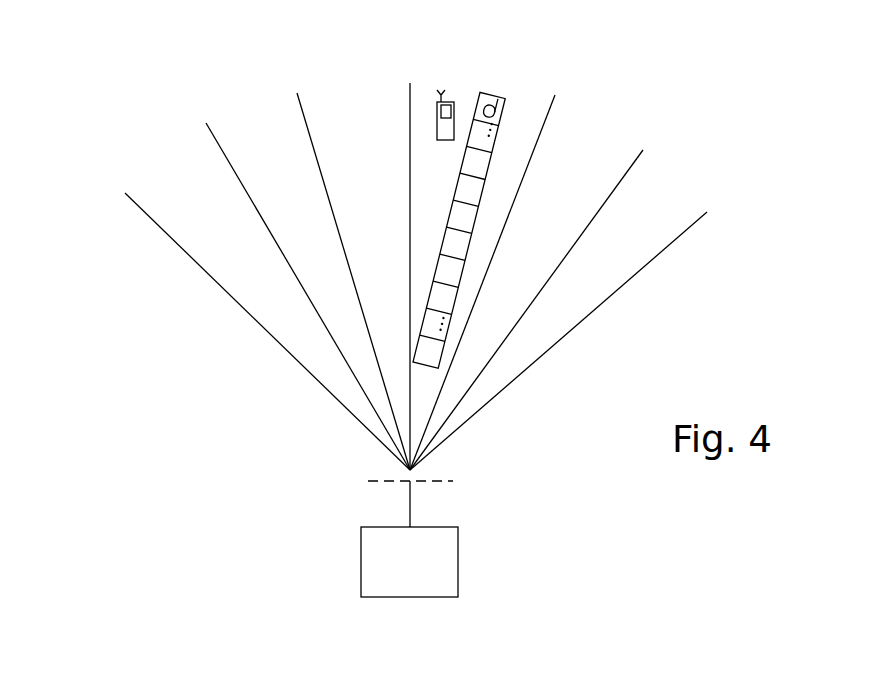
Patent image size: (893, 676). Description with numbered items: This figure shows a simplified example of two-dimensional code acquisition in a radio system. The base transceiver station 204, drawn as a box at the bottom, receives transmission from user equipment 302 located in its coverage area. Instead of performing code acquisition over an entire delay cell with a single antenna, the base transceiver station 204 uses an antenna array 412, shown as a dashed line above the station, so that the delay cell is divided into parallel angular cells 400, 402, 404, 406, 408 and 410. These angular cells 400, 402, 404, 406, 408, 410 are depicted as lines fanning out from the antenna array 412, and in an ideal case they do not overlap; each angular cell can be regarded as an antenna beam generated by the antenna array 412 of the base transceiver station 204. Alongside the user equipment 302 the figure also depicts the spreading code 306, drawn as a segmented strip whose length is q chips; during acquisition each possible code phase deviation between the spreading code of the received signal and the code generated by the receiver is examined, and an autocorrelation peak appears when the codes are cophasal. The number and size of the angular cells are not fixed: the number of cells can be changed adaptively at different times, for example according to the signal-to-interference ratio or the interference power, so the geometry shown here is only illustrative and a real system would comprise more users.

The angular cell 400 is at (167, 180).
The angular cell 402 is at (275, 122).
The angular cell 404 is at (396, 95).
The angular cell 406 is at (528, 99).
The angular cell 408 is at (601, 135).
The angular cell 410 is at (683, 200).
The spreading code 306 is at (479, 91).
The user equipment 302 is at (439, 141).
The antenna array 412 is at (368, 481).
The base transceiver station 204 is at (458, 550).